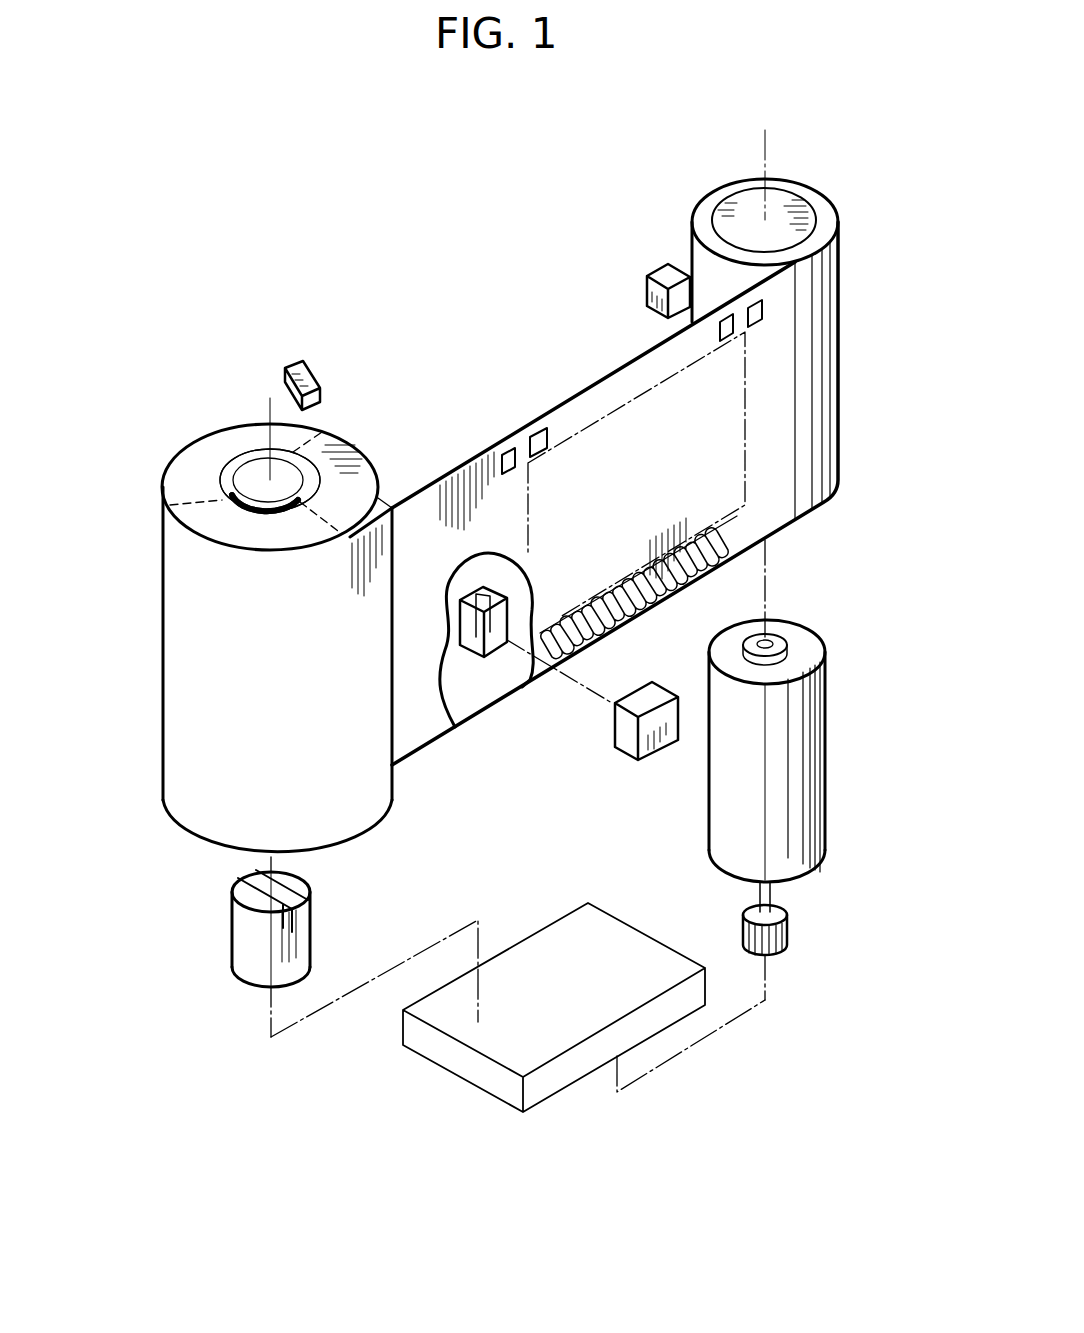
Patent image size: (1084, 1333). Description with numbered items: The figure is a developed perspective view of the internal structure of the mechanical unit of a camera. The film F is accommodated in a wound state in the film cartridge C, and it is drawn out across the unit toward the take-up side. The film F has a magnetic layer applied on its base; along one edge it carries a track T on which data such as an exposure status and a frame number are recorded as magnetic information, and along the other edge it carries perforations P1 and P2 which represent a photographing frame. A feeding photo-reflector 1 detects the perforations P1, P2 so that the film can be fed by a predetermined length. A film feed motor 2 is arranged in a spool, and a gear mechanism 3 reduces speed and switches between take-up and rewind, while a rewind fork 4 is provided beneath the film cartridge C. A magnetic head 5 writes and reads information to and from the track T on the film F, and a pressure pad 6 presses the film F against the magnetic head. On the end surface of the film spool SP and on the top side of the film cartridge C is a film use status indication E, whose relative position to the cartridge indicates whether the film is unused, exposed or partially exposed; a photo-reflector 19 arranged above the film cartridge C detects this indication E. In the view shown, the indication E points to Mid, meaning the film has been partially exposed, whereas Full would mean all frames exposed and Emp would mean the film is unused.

The feeding photo-reflector 1 is at (663, 268).
The film feed motor 2 is at (826, 782).
The gear mechanism 3 is at (585, 1078).
The rewind fork 4 is at (240, 928).
The magnetic head 5 is at (630, 740).
The pressure pad 6 is at (455, 605).
The photo-reflector 19 is at (322, 382).
The film cartridge C is at (188, 718).
The film use status indication E is at (232, 500).
The film F is at (832, 482).
The track T is at (668, 596).
The perforation P1 is at (541, 450).
The perforation P2 is at (722, 340).
The film spool SP is at (232, 462).